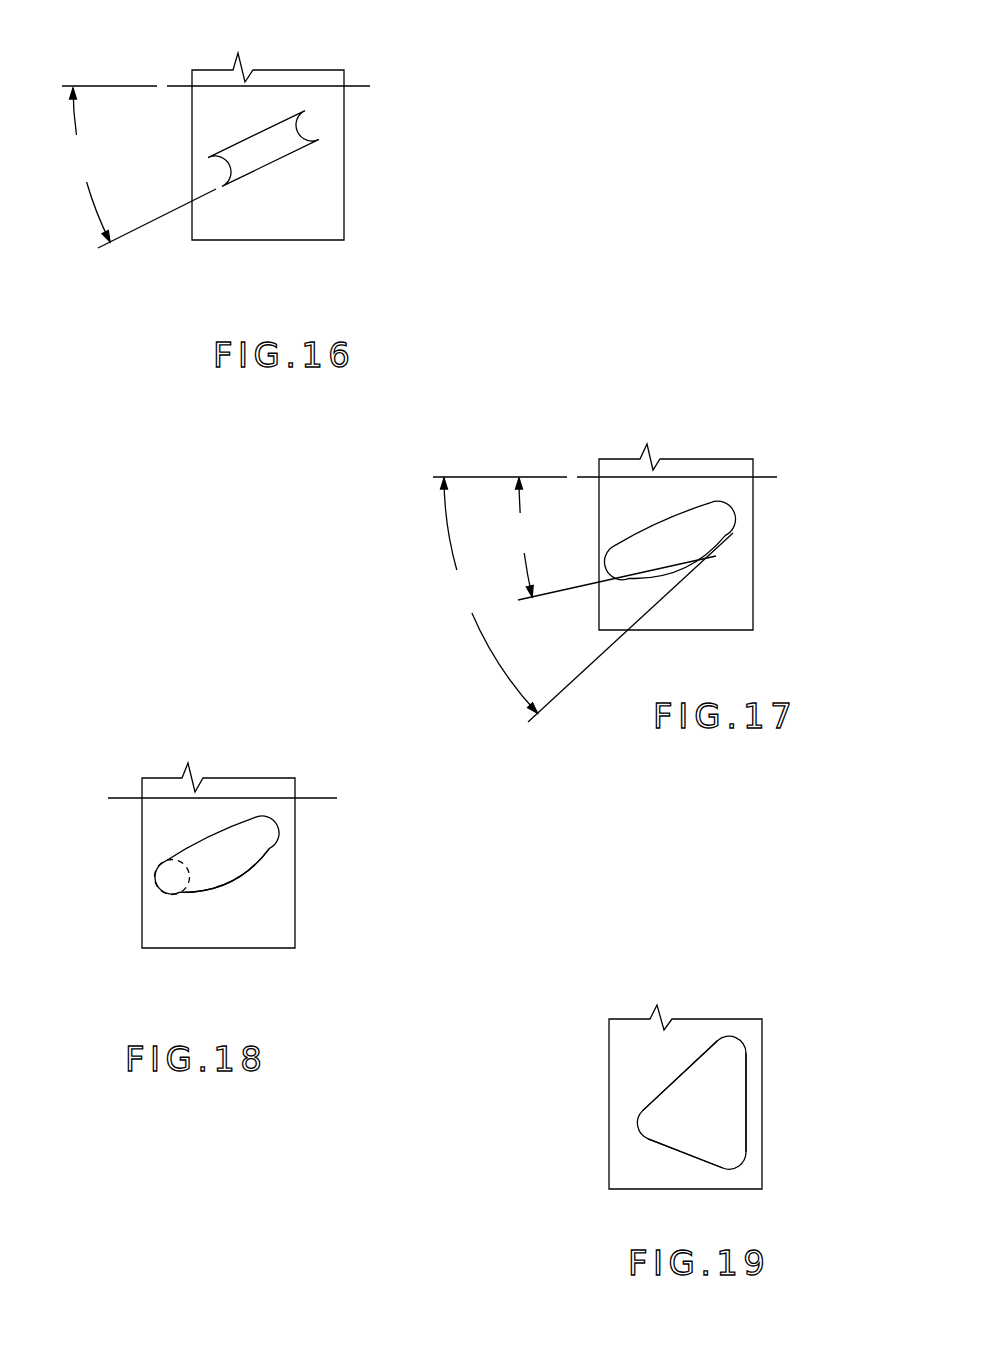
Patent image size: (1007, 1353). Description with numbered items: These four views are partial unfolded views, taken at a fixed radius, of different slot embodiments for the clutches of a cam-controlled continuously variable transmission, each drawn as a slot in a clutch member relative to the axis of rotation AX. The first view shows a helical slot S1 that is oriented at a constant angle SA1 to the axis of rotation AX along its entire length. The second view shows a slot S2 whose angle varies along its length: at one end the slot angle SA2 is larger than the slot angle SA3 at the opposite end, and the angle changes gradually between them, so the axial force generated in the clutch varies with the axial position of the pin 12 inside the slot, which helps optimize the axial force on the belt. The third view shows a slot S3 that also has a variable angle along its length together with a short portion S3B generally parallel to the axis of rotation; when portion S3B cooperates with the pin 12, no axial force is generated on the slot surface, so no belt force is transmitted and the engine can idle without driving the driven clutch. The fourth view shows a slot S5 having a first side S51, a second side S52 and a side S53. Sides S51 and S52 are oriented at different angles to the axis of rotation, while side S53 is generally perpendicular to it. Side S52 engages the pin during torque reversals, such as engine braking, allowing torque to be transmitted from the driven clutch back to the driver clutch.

In FIG. 16, the axis of rotation AX is at (360, 86).
In FIG. 17, the axis of rotation AX is at (760, 477).
In FIG. 18, the axis of rotation AX is at (317, 798).
In FIG. 16, the helical slot S1 is at (307, 148).
In FIG. 16, the slot angle SA1 is at (136, 168).
In FIG. 17, the slot S2 is at (683, 563).
In FIG. 17, the slot angle SA2 is at (586, 600).
In FIG. 17, the slot angle SA3 is at (606, 539).
In FIG. 18, the slot S3 is at (250, 872).
In FIG. 18, the short portion S3B is at (183, 893).
In FIG. 18, the pin 12 is at (154, 880).
In FIG. 19, the slot S5 is at (727, 1080).
In FIG. 19, the first side S51 is at (700, 1057).
In FIG. 19, the second side S52 is at (672, 1147).
In FIG. 19, the side S53 is at (747, 1127).